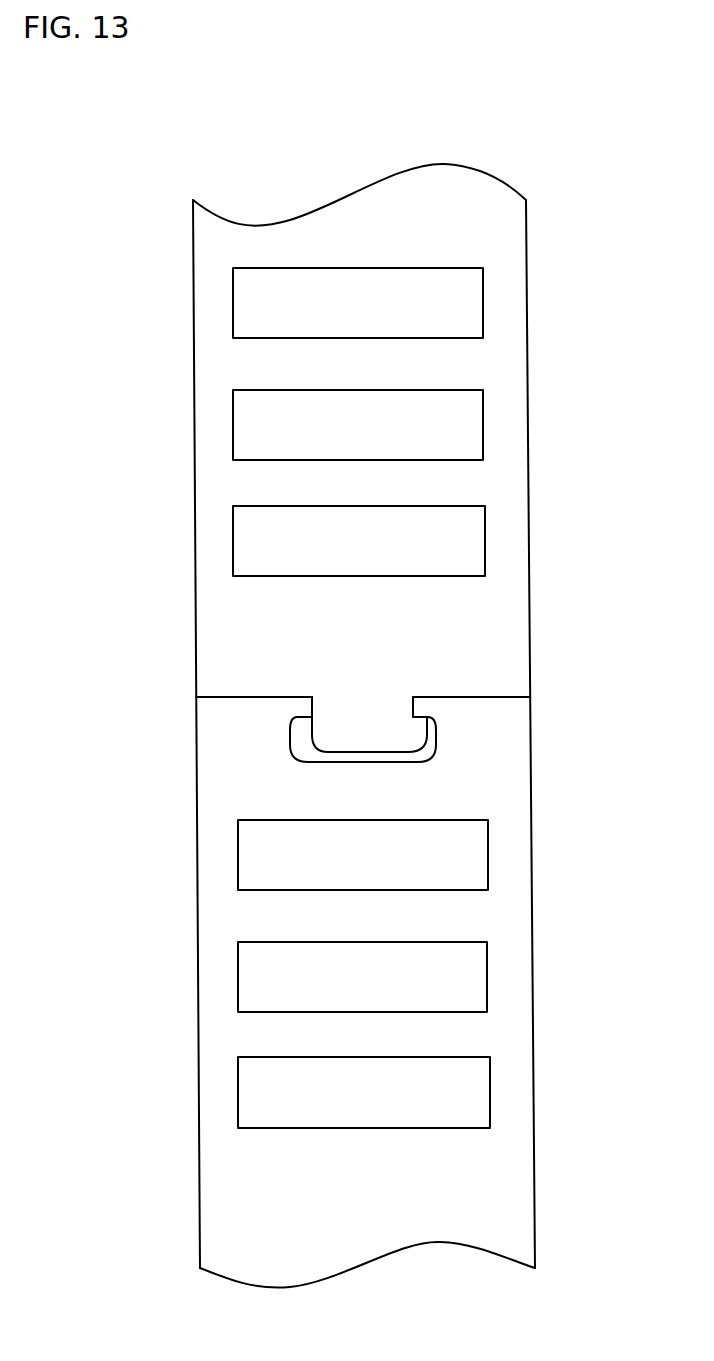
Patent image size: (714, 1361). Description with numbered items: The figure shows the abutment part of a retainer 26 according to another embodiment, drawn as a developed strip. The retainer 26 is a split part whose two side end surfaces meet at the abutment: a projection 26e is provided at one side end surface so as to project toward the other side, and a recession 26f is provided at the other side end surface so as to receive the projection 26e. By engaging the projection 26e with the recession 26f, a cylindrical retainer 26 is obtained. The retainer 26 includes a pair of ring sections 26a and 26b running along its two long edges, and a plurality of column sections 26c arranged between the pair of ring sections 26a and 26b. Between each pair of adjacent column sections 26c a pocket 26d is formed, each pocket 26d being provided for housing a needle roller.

The retainer 26 is at (130, 166).
The ring section 26a is at (507, 423).
The ring section 26b is at (213, 410).
The column section 26c is at (450, 365).
The pocket 26d is at (258, 305).
The projection 26e is at (362, 735).
The recession 26f is at (312, 752).